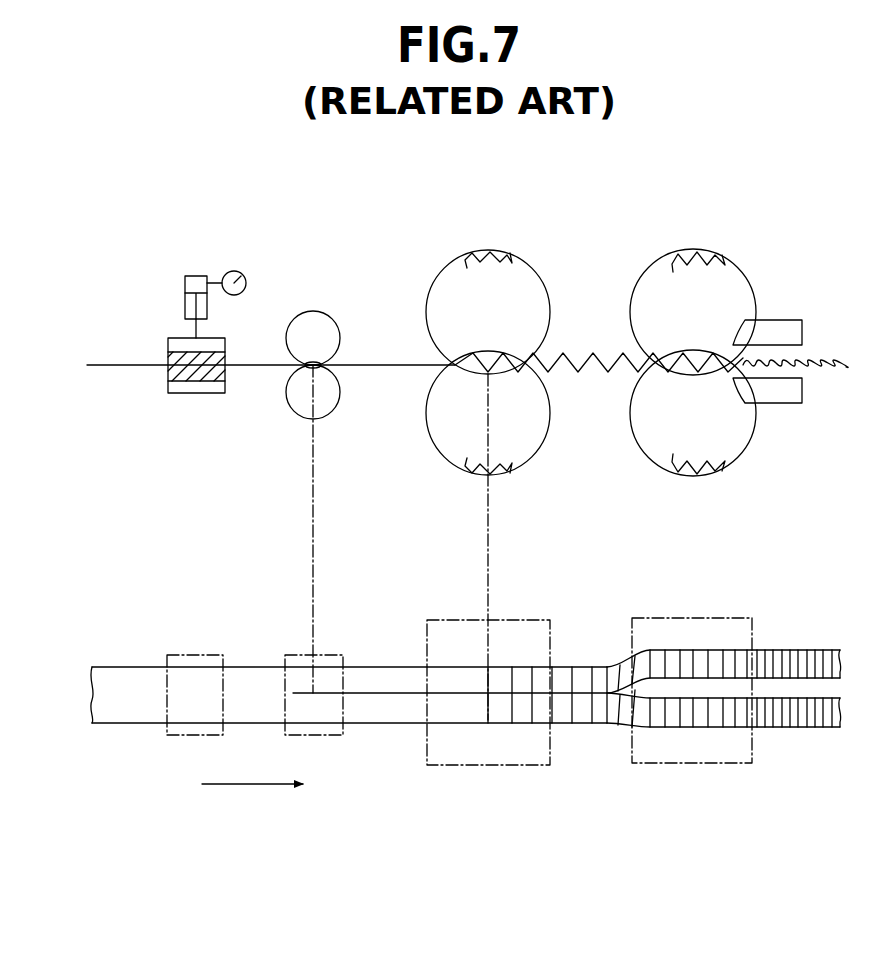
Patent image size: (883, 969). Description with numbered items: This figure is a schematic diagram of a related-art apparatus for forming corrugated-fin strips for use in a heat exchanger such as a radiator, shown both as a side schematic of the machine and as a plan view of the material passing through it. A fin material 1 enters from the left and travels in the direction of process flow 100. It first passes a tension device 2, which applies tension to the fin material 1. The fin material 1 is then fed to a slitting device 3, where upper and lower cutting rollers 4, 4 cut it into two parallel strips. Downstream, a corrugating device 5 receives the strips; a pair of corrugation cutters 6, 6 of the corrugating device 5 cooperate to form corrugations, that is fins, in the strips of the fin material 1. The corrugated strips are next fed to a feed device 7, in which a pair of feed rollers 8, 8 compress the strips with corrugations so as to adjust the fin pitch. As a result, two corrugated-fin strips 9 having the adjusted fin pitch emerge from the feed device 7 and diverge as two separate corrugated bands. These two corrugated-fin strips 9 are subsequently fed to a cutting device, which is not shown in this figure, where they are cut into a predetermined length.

The fin material 1 is at (88, 365).
The tension device 2 is at (177, 266).
The slitting device 3 is at (295, 479).
The cutting rollers 4 is at (323, 322).
The corrugating device 5 is at (497, 468).
The corrugation cutters 6 is at (490, 252).
The feed device 7 is at (705, 465).
The feed rollers 8 is at (713, 253).
The corrugated-fin strips 9 is at (824, 353).
The direction of process flow 100 is at (243, 786).